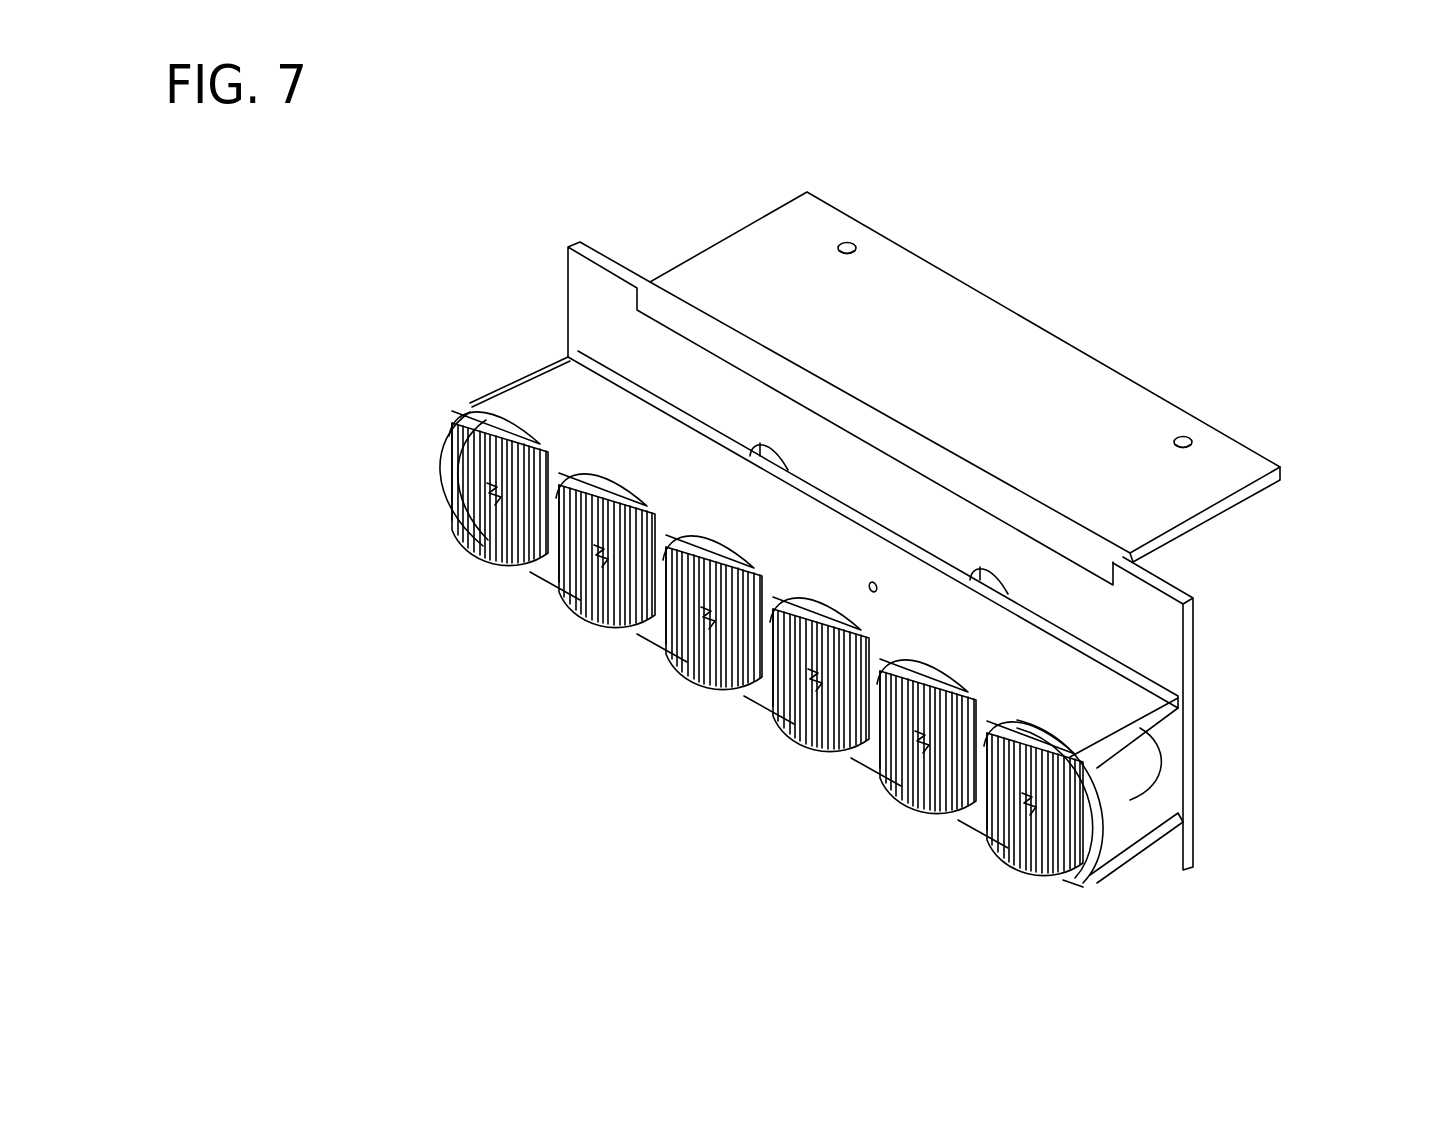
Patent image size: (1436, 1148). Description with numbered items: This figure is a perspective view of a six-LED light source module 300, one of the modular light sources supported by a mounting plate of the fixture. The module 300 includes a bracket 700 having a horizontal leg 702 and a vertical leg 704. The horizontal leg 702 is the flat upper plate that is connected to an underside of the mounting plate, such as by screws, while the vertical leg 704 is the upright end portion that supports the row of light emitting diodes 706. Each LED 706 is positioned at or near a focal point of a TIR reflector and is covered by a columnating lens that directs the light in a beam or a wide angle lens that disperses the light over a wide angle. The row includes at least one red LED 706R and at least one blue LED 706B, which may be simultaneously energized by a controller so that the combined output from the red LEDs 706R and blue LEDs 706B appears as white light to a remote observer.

The LED light module 300 is at (1193, 183).
The bracket 700 is at (1173, 537).
The horizontal leg 702 is at (1018, 333).
The vertical leg 704 is at (1188, 757).
The light emitting diodes 706 is at (695, 616).
The red LED 706R is at (477, 543).
The blue LED 706B is at (1013, 838).